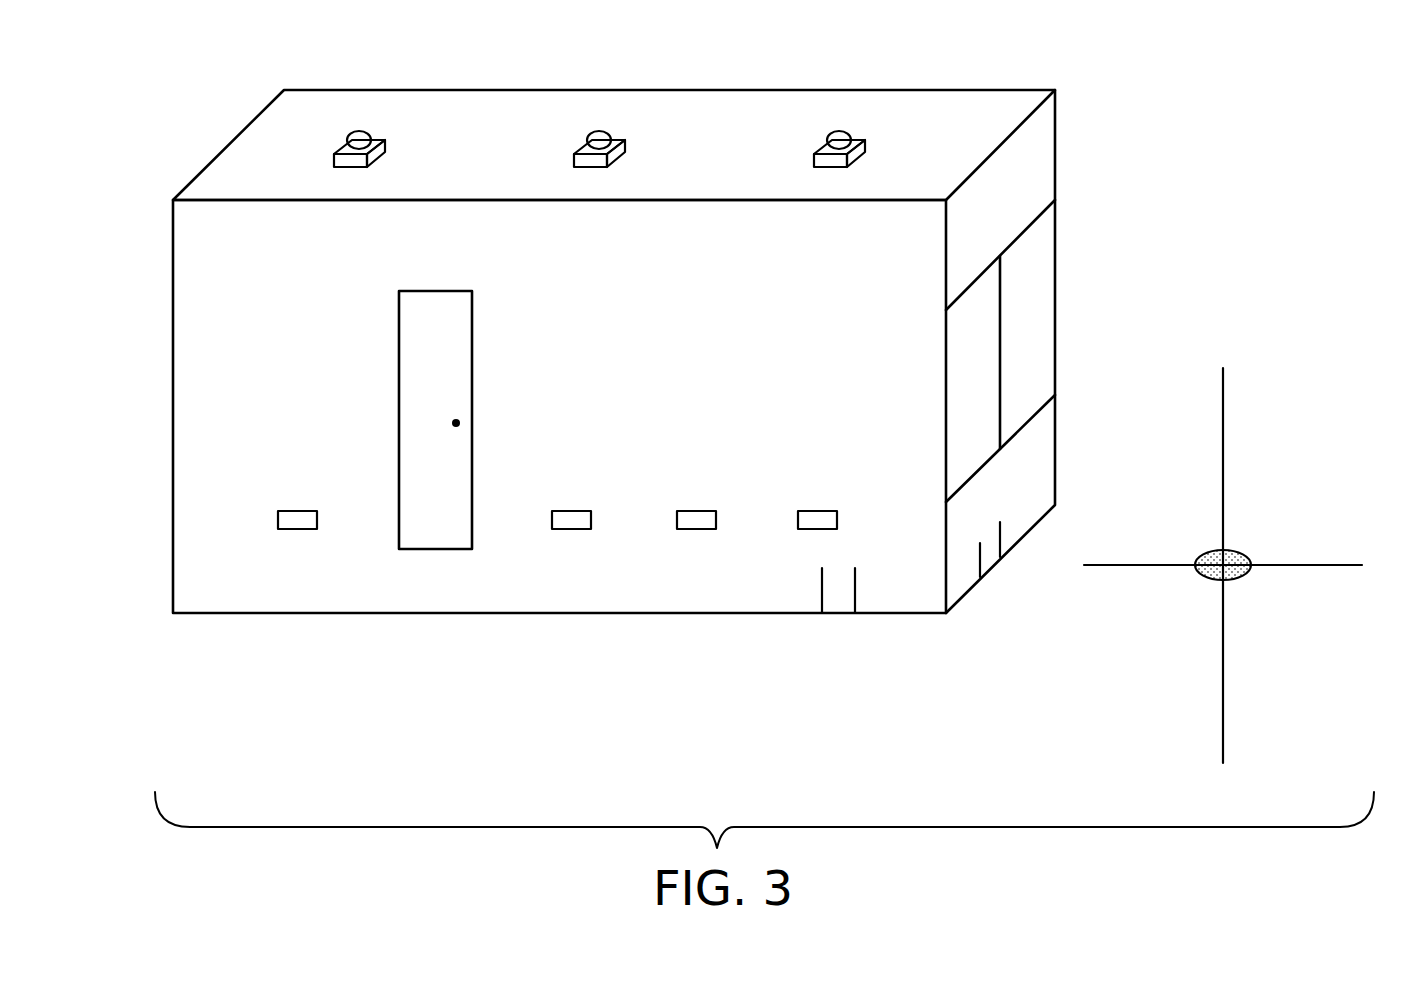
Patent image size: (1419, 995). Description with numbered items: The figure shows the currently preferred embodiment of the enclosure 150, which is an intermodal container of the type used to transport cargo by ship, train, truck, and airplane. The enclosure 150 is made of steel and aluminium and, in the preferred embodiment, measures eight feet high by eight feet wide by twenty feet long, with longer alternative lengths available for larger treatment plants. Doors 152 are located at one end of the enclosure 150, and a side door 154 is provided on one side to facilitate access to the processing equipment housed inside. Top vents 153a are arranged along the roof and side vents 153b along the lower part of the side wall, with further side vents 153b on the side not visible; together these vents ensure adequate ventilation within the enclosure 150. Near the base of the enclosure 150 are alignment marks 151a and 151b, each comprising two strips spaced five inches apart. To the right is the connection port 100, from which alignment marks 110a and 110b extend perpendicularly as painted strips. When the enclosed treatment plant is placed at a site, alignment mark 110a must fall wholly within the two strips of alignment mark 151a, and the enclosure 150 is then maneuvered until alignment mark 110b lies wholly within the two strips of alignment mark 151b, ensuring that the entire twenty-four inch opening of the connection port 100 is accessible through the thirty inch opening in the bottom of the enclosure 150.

The enclosure 150 is at (245, 199).
The doors 152 is at (1045, 283).
The side door 154 is at (472, 331).
The top vents 153a is at (383, 145).
The side vents 153b is at (278, 529).
The alignment mark 151a is at (985, 560).
The alignment mark 151b is at (841, 605).
The connection port 100 is at (1238, 553).
The alignment mark 110a is at (1332, 563).
The alignment mark 110b is at (1225, 655).